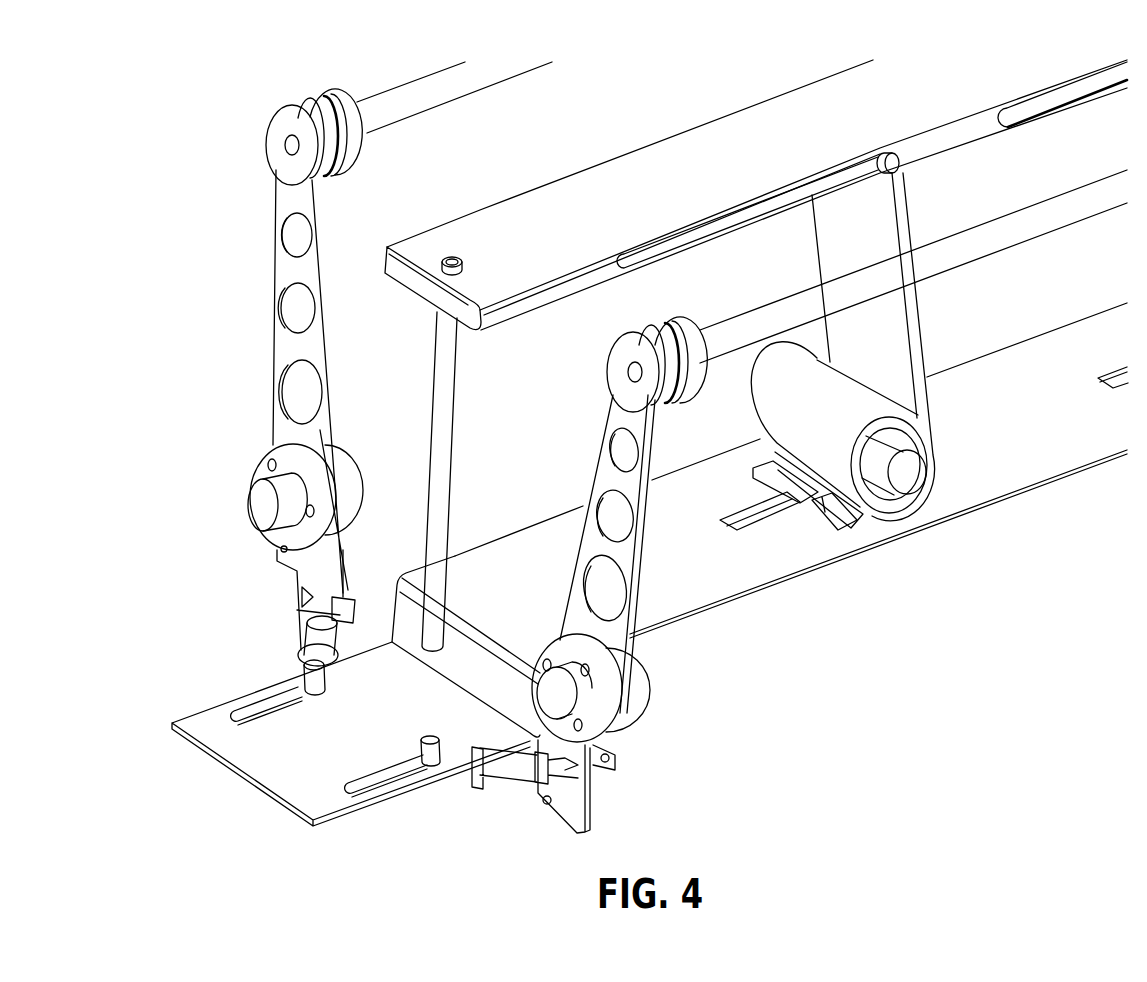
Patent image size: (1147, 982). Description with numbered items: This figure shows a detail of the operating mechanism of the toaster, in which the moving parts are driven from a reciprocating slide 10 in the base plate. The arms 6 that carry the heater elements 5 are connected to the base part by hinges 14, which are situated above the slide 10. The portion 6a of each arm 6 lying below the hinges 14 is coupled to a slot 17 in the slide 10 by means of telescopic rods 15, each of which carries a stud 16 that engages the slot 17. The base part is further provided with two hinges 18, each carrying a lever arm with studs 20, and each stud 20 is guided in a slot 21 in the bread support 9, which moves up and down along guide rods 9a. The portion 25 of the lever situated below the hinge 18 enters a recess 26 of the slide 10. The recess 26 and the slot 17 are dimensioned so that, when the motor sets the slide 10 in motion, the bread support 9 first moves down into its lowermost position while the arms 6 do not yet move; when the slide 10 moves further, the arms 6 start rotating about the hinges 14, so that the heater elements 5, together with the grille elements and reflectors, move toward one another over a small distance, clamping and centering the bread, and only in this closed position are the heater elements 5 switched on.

The heater element 5 is at (408, 105).
The arm 6 is at (285, 335).
The portion of arm 6a is at (300, 576).
The bread support 9 is at (520, 220).
The guide rod 9a is at (440, 455).
The slide 10 is at (255, 755).
The hinge 14 is at (350, 510).
The telescopic rod 15 is at (312, 632).
The stud 16 is at (423, 737).
The slot 17 is at (363, 783).
The hinge 18 is at (915, 475).
The stud 20 is at (890, 152).
The slot 21 is at (705, 233).
The portion of lever 25 is at (805, 495).
The recess 26 is at (745, 518).